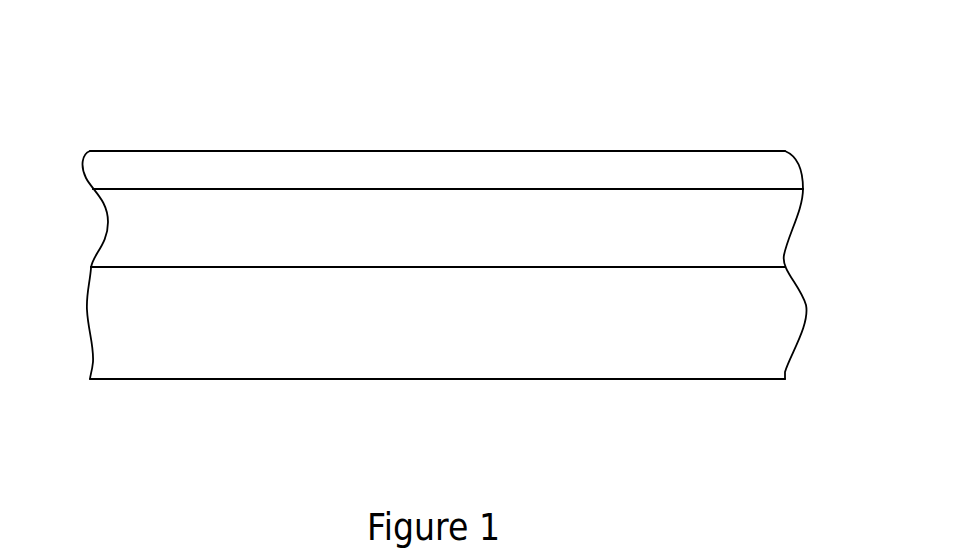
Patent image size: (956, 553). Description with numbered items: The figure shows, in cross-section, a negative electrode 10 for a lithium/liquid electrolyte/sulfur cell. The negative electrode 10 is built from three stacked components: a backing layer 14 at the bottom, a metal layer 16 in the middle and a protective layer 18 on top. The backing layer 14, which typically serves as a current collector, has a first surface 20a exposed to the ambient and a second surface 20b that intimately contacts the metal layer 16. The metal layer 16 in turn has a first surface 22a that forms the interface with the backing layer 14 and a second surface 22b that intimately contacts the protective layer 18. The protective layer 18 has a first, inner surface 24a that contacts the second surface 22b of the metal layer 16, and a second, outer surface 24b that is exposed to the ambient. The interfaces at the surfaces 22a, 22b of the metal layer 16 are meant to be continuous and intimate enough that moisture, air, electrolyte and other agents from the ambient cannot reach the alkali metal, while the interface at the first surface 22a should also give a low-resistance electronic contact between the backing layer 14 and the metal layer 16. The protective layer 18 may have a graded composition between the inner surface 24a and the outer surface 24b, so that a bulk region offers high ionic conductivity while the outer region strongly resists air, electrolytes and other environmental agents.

The negative electrode 10 is at (606, 115).
The backing layer 14 is at (543, 337).
The metal layer 16 is at (543, 248).
The protective layer 18 is at (788, 164).
The first surface of backing layer 20a is at (258, 380).
The second surface of backing layer 20b is at (108, 267).
The first surface of metal layer 22a is at (742, 267).
The second surface of metal layer 22b is at (751, 189).
The first surface of protective layer 24a is at (105, 189).
The second surface of protective layer 24b is at (254, 151).